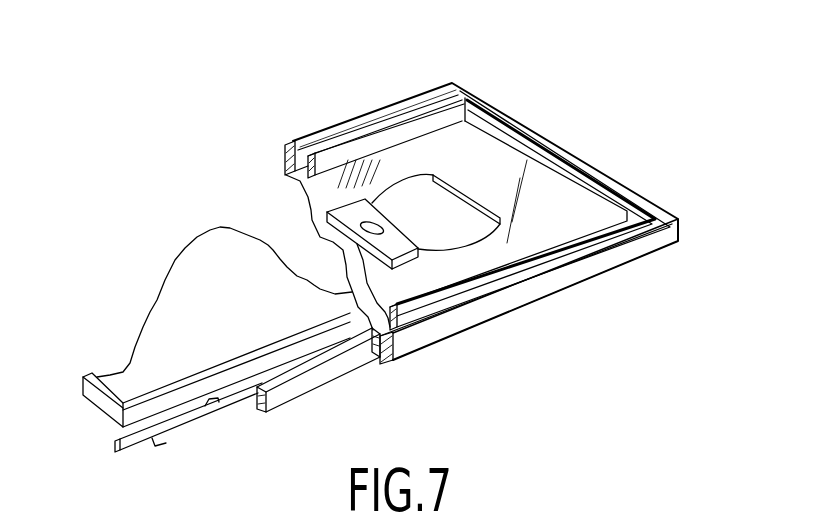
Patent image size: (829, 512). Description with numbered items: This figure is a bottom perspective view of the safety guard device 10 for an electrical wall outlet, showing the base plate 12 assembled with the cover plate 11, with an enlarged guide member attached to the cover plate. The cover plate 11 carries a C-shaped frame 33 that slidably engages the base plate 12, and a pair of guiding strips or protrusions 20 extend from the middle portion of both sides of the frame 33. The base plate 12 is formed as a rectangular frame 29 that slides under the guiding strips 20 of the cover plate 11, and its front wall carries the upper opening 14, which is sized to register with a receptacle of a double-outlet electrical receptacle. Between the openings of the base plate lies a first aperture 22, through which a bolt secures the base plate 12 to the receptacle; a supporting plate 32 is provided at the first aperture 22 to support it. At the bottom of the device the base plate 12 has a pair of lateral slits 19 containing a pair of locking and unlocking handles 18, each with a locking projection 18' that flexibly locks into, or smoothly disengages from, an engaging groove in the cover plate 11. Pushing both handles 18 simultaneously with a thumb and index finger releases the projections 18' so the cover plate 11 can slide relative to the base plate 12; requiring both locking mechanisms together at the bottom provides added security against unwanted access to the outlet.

The tray assembly 10 is at (575, 134).
The cover plate 11 is at (416, 354).
The base plate 12 is at (297, 142).
The upper opening 14 is at (455, 213).
The locking and unlocking handle 18 is at (216, 410).
The locking projection 18' is at (188, 433).
The lateral slit 19 is at (212, 403).
The guiding strip 20 is at (333, 141).
The first aperture 22 is at (322, 294).
The rectangular frame 29 is at (405, 121).
The supporting plate 32 is at (362, 229).
The C-shaped frame 33 is at (343, 370).